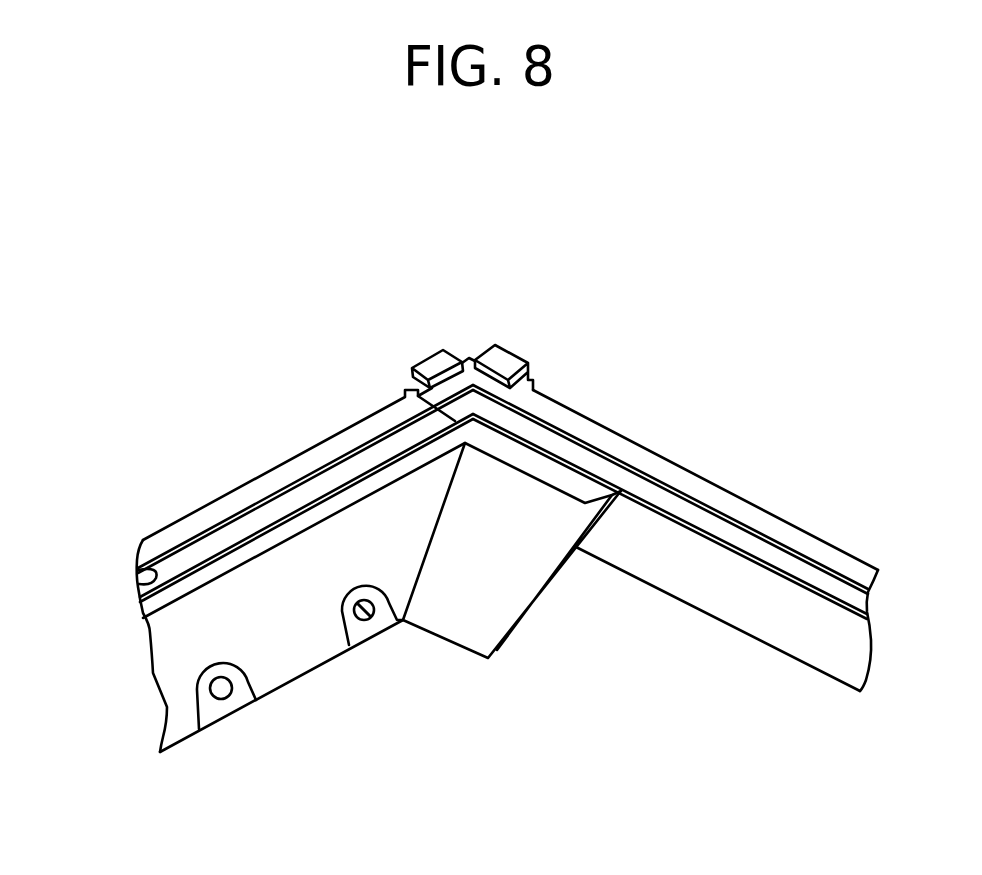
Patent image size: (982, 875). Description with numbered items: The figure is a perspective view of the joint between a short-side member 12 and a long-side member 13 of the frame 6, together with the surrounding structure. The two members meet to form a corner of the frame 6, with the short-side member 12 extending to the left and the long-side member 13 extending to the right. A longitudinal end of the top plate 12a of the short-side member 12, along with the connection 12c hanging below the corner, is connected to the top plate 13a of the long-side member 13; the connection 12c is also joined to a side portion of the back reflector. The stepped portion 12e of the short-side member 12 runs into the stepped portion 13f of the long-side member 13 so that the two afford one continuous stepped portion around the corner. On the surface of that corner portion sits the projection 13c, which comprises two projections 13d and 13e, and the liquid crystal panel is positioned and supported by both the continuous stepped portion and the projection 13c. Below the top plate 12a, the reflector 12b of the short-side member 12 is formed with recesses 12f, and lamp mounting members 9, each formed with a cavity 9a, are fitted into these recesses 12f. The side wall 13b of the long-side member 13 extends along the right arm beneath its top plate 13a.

The frame 6 is at (801, 359).
The lamp mounting member 9 is at (393, 620).
The cavity 9a is at (368, 620).
The short-side member 12 is at (278, 473).
The top plate 12a is at (167, 543).
The reflector 12b is at (243, 598).
The connection 12c is at (500, 610).
The stepped portion 12e is at (135, 587).
The recess 12f is at (350, 647).
The long-side member 13 is at (807, 460).
The top plate 13a is at (648, 467).
The side wall of second frame member 13b is at (702, 565).
The projection 13c is at (557, 270).
The projection 13d is at (507, 360).
The projection 13e is at (448, 357).
The stepped portion 13f is at (562, 430).